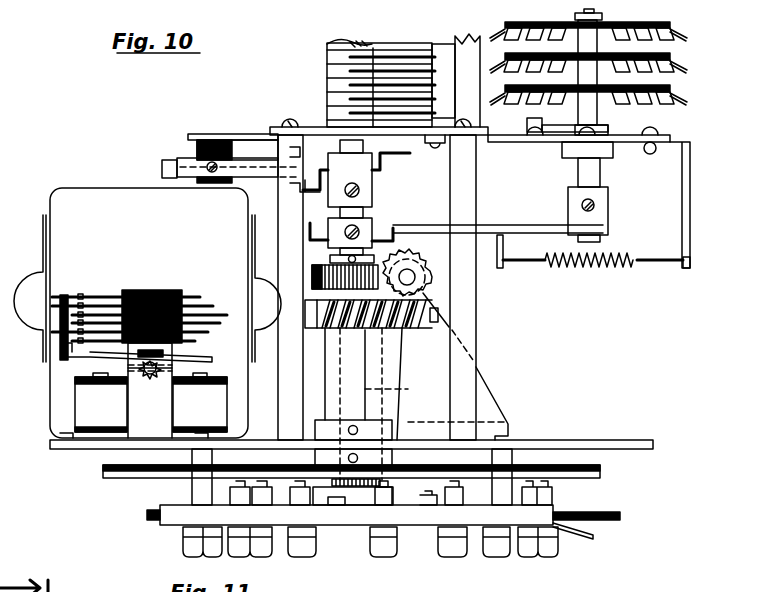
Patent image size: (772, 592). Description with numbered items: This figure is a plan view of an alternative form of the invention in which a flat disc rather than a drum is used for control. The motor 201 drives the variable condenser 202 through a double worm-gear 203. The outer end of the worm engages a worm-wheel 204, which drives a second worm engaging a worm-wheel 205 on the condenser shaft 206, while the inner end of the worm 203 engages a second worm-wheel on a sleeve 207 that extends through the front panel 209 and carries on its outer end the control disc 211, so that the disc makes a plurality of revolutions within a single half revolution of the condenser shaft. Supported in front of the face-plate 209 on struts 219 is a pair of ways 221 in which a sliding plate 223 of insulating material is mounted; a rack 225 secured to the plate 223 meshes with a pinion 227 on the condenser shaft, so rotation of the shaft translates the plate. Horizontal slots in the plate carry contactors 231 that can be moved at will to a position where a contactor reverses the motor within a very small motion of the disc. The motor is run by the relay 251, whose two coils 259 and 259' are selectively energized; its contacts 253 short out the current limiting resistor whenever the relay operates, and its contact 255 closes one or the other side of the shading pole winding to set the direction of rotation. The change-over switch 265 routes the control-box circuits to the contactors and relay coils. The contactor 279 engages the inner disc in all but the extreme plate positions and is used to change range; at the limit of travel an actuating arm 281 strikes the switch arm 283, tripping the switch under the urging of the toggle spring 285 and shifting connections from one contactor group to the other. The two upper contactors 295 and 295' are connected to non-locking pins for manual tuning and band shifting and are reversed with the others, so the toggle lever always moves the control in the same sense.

The motor 201 is at (106, 178).
The variable condenser 202 is at (336, 78).
The double worm-gear 203 is at (438, 322).
The worm-wheel 204 is at (432, 270).
The worm-wheel 205 is at (312, 279).
The condenser shaft 206 is at (406, 391).
The sleeve 207 is at (376, 358).
The front panel 209 is at (642, 430).
The control disc 211 is at (600, 472).
The struts 219 is at (202, 493).
The ways 221 is at (167, 528).
The sliding plate 223 is at (620, 514).
The rack 225 is at (408, 495).
The pinion 227 is at (358, 490).
The contactors 231 is at (534, 555).
The relay 251 is at (163, 415).
The contacts 253 is at (115, 307).
The contact 255 is at (96, 330).
The coil 259 is at (200, 402).
The coil 259' is at (101, 402).
The change-over switch 265 is at (670, 88).
The contactor 279 is at (384, 549).
The actuating arm 281 is at (392, 226).
The switch arm 283 is at (526, 232).
The toggle spring 285 is at (618, 265).
The upper contactor 295 is at (275, 559).
The upper contactor 295' is at (479, 559).